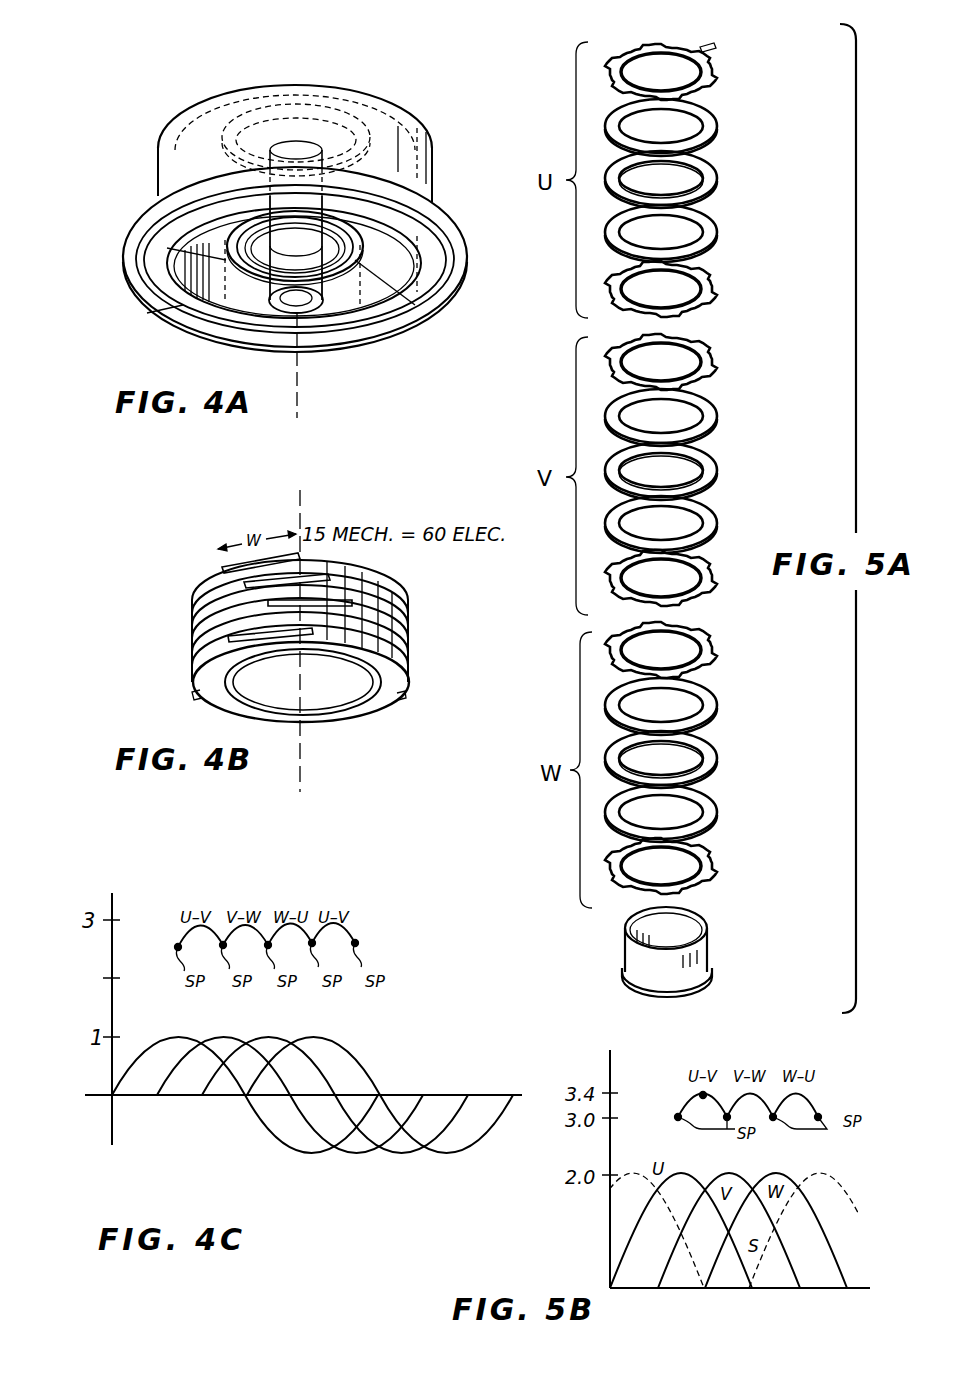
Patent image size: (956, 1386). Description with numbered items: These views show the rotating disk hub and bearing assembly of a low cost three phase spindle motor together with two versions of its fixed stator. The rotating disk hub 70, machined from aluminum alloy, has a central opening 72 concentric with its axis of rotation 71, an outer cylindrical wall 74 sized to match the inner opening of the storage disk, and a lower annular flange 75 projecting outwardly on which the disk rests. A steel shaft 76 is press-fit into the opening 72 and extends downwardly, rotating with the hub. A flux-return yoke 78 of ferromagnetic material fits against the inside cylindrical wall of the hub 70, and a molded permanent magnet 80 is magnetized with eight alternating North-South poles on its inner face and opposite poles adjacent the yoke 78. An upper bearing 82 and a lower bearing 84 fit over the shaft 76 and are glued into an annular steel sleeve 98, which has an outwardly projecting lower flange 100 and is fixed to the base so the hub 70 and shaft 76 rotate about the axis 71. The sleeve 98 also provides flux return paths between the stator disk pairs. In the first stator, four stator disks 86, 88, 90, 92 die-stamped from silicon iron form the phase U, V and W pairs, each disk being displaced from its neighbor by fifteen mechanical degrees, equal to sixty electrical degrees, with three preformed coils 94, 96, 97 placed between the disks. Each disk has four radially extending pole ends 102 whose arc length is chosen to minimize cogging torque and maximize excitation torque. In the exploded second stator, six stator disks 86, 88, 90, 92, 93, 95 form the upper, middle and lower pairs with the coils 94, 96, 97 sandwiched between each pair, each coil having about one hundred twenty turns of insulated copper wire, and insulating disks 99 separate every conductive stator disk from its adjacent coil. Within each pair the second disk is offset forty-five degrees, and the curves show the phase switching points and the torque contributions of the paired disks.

In FIG. 4A, the rotating disk hub 70 is at (187, 86).
In FIG. 4A, the axis of rotation 71 is at (298, 398).
In FIG. 4A, the opening 72 is at (300, 147).
In FIG. 4A, the outer cylindrical wall 74 is at (182, 148).
In FIG. 4A, the lower annular flange 75 is at (442, 198).
In FIG. 4A, the steel shaft 76 is at (318, 312).
In FIG. 4A, the flux-return yoke 78 is at (232, 244).
In FIG. 4A, the molded permanent magnet 80 is at (175, 308).
In FIG. 4A, the upper bearing 82 is at (353, 124).
In FIG. 4A, the lower bearing 84 is at (423, 328).
In FIG. 4B, the stator disk 86 is at (380, 561).
In FIG. 4C, the stator disk 86 is at (272, 1133).
In FIG. 5A, the stator disk 86 is at (716, 76).
In FIG. 5B, the stator disk 86 is at (681, 1249).
In FIG. 4B, the stator disk 88 is at (407, 607).
In FIG. 4C, the stator disk 88 is at (347, 1152).
In FIG. 5A, the stator disk 88 is at (716, 292).
In FIG. 5B, the stator disk 88 is at (620, 1268).
In FIG. 4B, the stator disk 90 is at (407, 635).
In FIG. 4C, the stator disk 90 is at (393, 1152).
In FIG. 5A, the stator disk 90 is at (716, 360).
In FIG. 5B, the stator disk 90 is at (729, 1216).
In FIG. 4B, the stator disk 92 is at (407, 683).
In FIG. 4C, the stator disk 92 is at (467, 1152).
In FIG. 5A, the stator disk 92 is at (710, 592).
In FIG. 5B, the stator disk 92 is at (727, 1173).
In FIG. 5A, the stator disk 93 is at (716, 648).
In FIG. 5B, the stator disk 93 is at (801, 1213).
In FIG. 5A, the preformed coil 94 is at (716, 176).
In FIG. 5A, the stator disk 95 is at (716, 864).
In FIG. 5B, the stator disk 95 is at (793, 1178).
In FIG. 5A, the preformed coil 96 is at (716, 468).
In FIG. 5A, the preformed coil 97 is at (716, 756).
In FIG. 5A, the annular steel sleeve 98 is at (707, 920).
In FIG. 5A, the insulating disk 99 is at (716, 123).
In FIG. 5A, the lower flange 100 is at (712, 990).
In FIG. 4B, the pole end 102 is at (218, 563).
In FIG. 5A, the pole end 102 is at (712, 52).